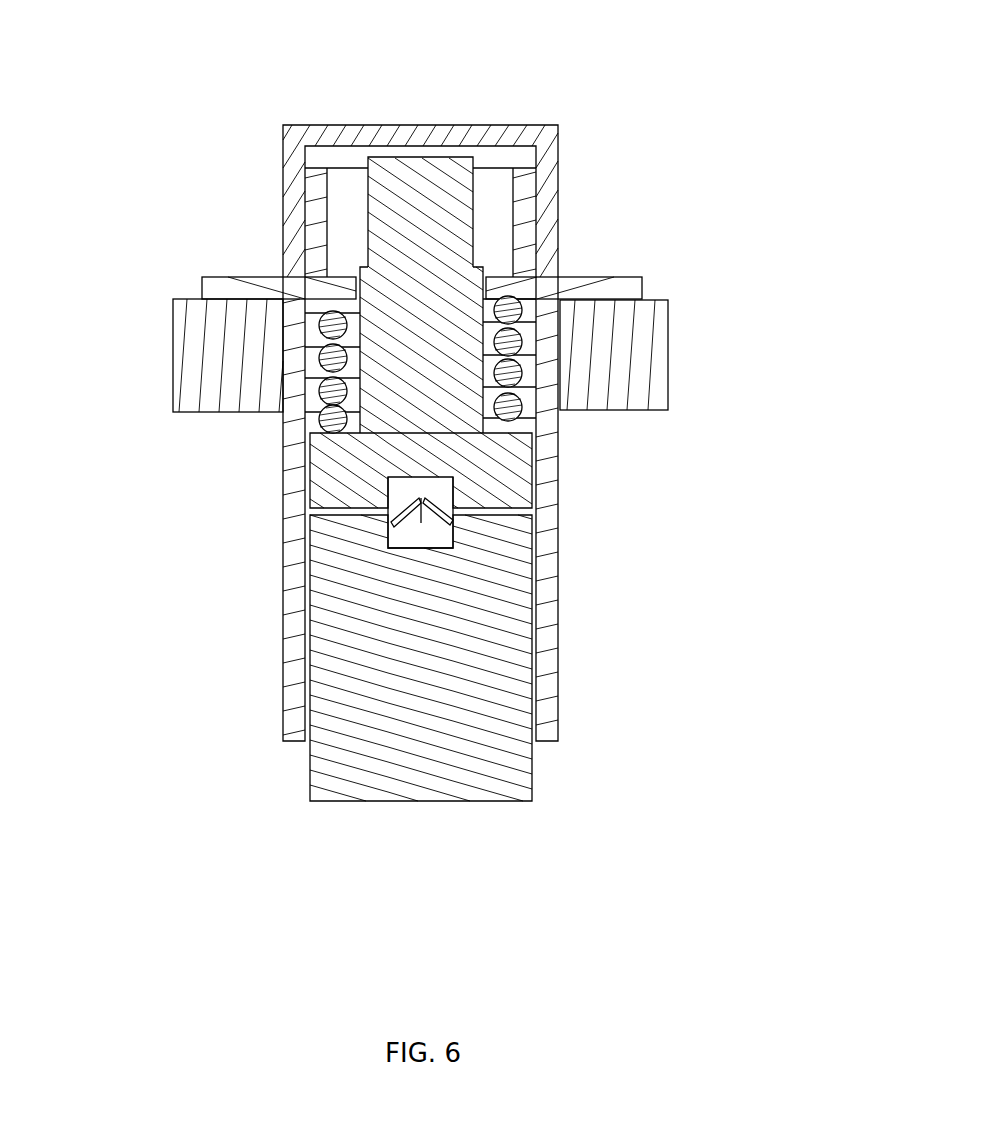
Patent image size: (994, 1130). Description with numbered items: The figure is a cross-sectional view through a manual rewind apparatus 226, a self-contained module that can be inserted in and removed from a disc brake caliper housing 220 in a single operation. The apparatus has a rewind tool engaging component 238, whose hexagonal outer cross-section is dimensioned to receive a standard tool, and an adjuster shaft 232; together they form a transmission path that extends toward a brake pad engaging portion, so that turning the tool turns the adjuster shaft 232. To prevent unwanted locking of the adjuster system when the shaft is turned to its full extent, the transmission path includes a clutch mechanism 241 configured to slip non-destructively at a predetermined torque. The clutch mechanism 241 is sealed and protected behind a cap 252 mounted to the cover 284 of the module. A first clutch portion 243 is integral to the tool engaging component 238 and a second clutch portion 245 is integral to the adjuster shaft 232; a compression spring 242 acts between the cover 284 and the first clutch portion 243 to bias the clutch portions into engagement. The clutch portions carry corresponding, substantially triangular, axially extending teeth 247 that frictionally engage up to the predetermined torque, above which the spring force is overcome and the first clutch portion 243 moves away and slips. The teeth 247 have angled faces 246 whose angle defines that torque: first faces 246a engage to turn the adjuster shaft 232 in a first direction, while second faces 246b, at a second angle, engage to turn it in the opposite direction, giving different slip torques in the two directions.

The manual rewind apparatus 226 is at (628, 132).
The cap 252 is at (499, 125).
The clutch mechanism 241 is at (572, 512).
The rewind tool engaging component 238 is at (418, 157).
The adjuster shaft 232 is at (402, 300).
The first clutch portion 243 is at (518, 472).
The second clutch portion 245 is at (320, 535).
The teeth 247 is at (428, 503).
The faces 246 is at (432, 554).
The first faces 246a is at (443, 503).
The second faces 246b is at (420, 509).
The cover 284 is at (295, 348).
The disc brake caliper housing 220 is at (230, 351).
The compression spring 242 is at (512, 342).